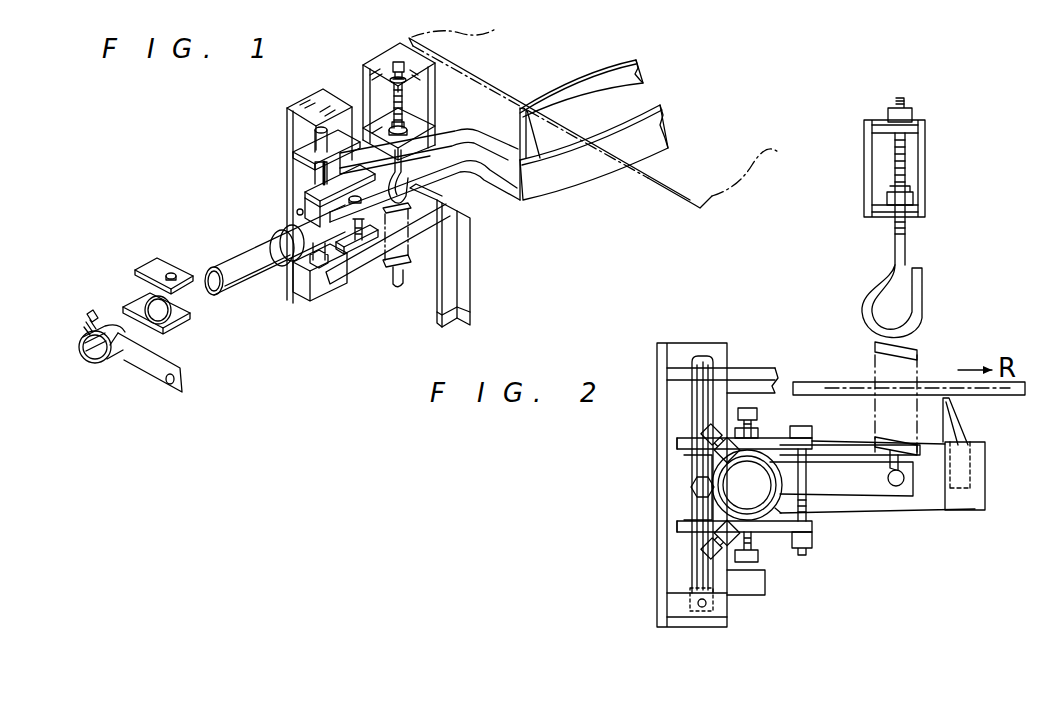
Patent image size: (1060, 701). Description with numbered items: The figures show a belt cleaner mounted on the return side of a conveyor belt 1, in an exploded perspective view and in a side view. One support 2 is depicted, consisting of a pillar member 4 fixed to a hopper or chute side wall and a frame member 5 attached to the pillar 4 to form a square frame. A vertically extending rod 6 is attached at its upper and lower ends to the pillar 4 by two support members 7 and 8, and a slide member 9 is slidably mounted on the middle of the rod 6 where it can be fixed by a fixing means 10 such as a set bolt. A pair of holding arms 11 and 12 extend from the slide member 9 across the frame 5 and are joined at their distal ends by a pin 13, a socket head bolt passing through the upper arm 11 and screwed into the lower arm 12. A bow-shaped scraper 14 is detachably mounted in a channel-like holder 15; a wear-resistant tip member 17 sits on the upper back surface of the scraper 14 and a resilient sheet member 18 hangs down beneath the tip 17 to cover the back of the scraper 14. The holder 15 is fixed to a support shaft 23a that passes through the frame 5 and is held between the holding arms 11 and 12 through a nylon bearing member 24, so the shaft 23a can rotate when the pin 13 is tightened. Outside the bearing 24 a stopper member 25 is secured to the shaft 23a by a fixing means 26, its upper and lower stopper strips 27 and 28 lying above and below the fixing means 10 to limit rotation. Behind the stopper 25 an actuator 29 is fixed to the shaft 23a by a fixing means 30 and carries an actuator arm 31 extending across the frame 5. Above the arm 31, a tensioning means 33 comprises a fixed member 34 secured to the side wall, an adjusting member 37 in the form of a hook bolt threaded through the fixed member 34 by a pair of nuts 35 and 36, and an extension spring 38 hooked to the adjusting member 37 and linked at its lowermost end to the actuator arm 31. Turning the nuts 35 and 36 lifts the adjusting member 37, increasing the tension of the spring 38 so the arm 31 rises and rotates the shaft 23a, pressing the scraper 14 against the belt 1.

In FIG. 1, the conveyor belt 1 is at (665, 200).
In FIG. 2, the conveyor belt 1 is at (1012, 404).
In FIG. 1, the support 2 is at (297, 196).
In FIG. 2, the support 2 is at (682, 490).
In FIG. 1, the pillar member 4 is at (287, 120).
In FIG. 2, the pillar member 4 is at (657, 398).
In FIG. 1, the frame member 5 is at (472, 271).
In FIG. 2, the frame member 5 is at (762, 370).
In FIG. 1, the rod 6 is at (320, 128).
In FIG. 2, the rod 6 is at (695, 572).
In FIG. 1, the support member 7 is at (305, 143).
In FIG. 2, the support member 7 is at (690, 370).
In FIG. 1, the support member 8 is at (322, 284).
In FIG. 2, the support member 8 is at (676, 618).
In FIG. 1, the slide member 9 is at (312, 177).
In FIG. 2, the slide member 9 is at (690, 470).
In FIG. 1, the fixing means 10 is at (300, 213).
In FIG. 2, the fixing means 10 is at (690, 487).
In FIG. 1, the holding arm 11 is at (330, 192).
In FIG. 2, the holding arm 11 is at (815, 437).
In FIG. 1, the holding arm 12 is at (350, 247).
In FIG. 2, the holding arm 12 is at (812, 527).
In FIG. 1, the pin 13 is at (350, 222).
In FIG. 2, the pin 13 is at (802, 540).
In FIG. 1, the scraper 14 is at (585, 132).
In FIG. 2, the scraper 14 is at (970, 428).
In FIG. 1, the holder 15 is at (590, 172).
In FIG. 2, the holder 15 is at (988, 483).
In FIG. 1, the tip member 17 is at (566, 90).
In FIG. 1, the resilient sheet member 18 is at (510, 130).
In FIG. 1, the support shaft 23a is at (248, 285).
In FIG. 2, the support shaft 23a is at (778, 480).
In FIG. 1, the bearing member 24 is at (272, 237).
In FIG. 1, the stopper member 25 is at (200, 310).
In FIG. 1, the fixing means 26 is at (175, 272).
In FIG. 2, the fixing means 26 is at (755, 418).
In FIG. 1, the stopper strip 27 is at (157, 262).
In FIG. 2, the stopper strip 27 is at (680, 446).
In FIG. 1, the stopper strip 28 is at (135, 300).
In FIG. 2, the stopper strip 28 is at (680, 521).
In FIG. 1, the actuator 29 is at (97, 372).
In FIG. 2, the actuator 29 is at (775, 510).
In FIG. 1, the fixing means 30 is at (85, 312).
In FIG. 2, the fixing means 30 is at (702, 426).
In FIG. 1, the actuator arm 31 is at (156, 380).
In FIG. 2, the actuator arm 31 is at (882, 500).
In FIG. 1, the tensioning means 33 is at (392, 101).
In FIG. 2, the tensioning means 33 is at (904, 210).
In FIG. 1, the fixed member 34 is at (362, 78).
In FIG. 2, the fixed member 34 is at (862, 164).
In FIG. 1, the nut 35 is at (396, 65).
In FIG. 2, the nut 35 is at (906, 115).
In FIG. 1, the nut 36 is at (396, 124).
In FIG. 2, the nut 36 is at (908, 197).
In FIG. 1, the adjusting member 37 is at (400, 115).
In FIG. 2, the adjusting member 37 is at (888, 247).
In FIG. 1, the extension spring 38 is at (408, 250).
In FIG. 2, the extension spring 38 is at (922, 356).